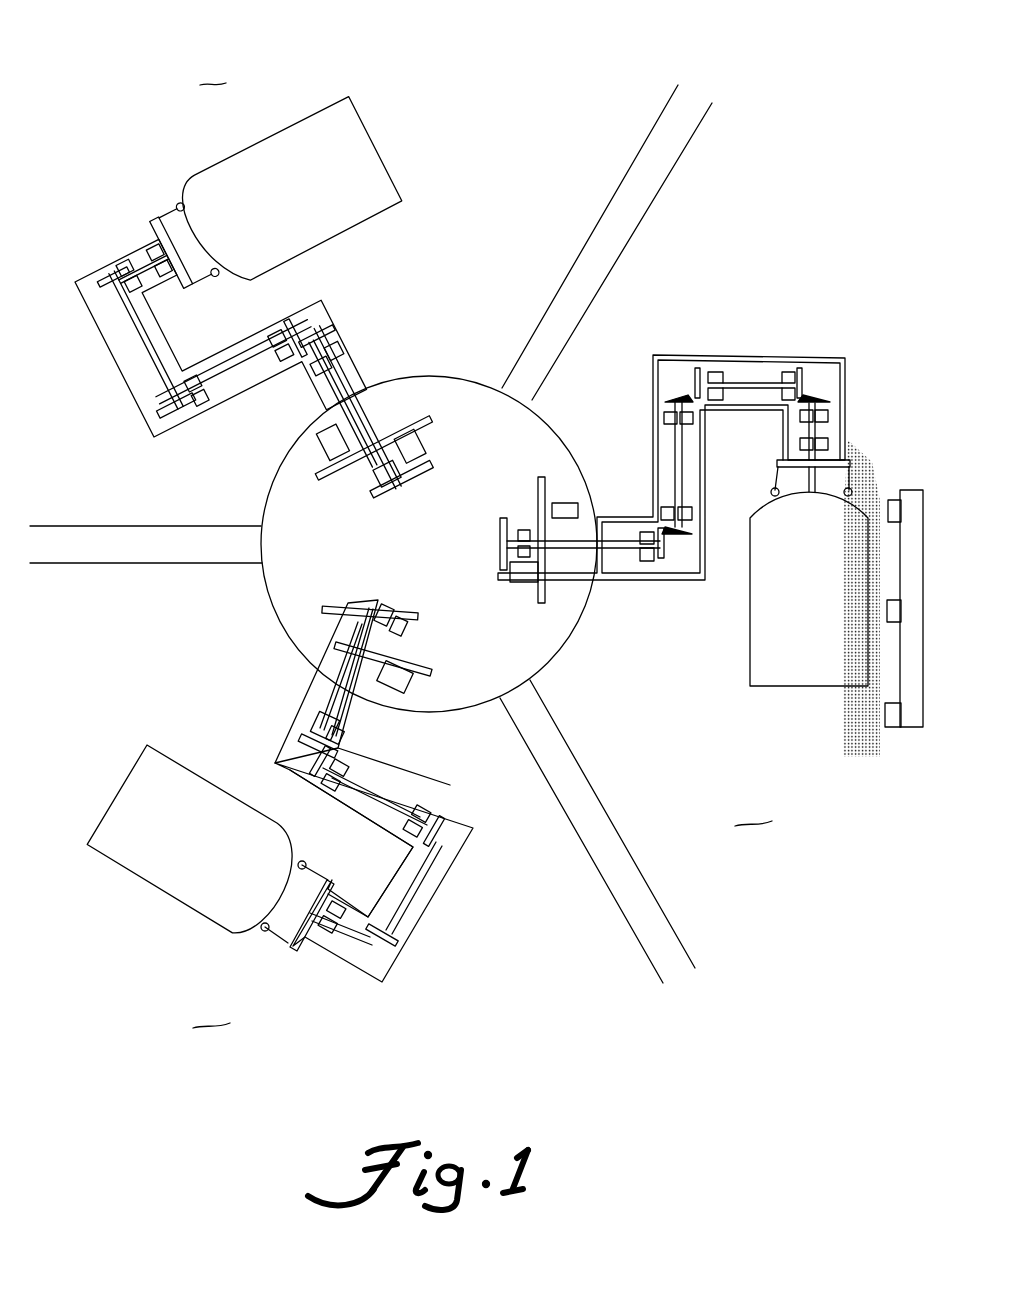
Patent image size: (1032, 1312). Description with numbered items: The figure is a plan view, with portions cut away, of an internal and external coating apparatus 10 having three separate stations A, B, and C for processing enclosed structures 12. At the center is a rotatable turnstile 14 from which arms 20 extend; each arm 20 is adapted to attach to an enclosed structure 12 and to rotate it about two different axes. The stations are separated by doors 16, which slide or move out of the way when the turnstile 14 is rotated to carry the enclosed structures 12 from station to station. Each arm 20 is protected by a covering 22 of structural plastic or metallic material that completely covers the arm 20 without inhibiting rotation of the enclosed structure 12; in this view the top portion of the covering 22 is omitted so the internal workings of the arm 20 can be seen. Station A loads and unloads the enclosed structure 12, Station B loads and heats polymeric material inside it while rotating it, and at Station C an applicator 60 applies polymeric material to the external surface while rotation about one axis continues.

The internal and external coating apparatus 10 is at (442, 98).
The enclosed structure 12 is at (300, 207).
The rotatable turnstile 14 is at (463, 377).
The doors 16 is at (637, 163).
The arms 20 is at (116, 402).
The covering 22 is at (153, 422).
The applicator 60 is at (916, 487).